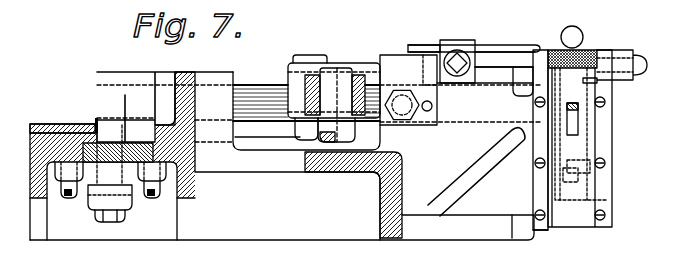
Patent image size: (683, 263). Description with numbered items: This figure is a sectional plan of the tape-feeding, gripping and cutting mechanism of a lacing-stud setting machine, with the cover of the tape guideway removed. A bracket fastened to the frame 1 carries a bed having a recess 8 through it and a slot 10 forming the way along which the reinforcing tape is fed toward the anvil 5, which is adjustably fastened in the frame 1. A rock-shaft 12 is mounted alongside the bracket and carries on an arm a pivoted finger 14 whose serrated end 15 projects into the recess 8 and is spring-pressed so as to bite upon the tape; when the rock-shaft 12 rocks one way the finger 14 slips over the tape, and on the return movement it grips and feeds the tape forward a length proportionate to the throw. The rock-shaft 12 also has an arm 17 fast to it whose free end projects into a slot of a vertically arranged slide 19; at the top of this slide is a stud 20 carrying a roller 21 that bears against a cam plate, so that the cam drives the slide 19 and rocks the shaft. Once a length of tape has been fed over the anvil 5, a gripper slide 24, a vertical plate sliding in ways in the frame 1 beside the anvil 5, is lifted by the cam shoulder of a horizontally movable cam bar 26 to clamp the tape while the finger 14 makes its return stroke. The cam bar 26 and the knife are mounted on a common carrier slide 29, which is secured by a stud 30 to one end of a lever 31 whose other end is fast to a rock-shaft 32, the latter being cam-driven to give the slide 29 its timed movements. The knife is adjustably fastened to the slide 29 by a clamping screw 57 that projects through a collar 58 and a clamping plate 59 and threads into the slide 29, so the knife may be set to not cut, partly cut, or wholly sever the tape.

The frame 1 is at (378, 205).
The anvil 5 is at (565, 29).
The recess 8 is at (588, 82).
The slot 10 is at (573, 220).
The rock-shaft 12 is at (262, 88).
The finger 14 is at (573, 125).
The serrated end 15 is at (578, 110).
The arm 17 is at (95, 124).
The slide 19 is at (92, 160).
The stud 20 is at (113, 173).
The roller 21 is at (133, 200).
The gripper slide 24 is at (590, 50).
The cam bar 26 is at (495, 47).
The slide 29 is at (288, 68).
The stud 30 is at (320, 60).
The lever 31 is at (360, 72).
The rock-shaft 32 is at (342, 132).
The clamping screw 57 is at (455, 45).
The collar 58 is at (463, 55).
The clamping plate 59 is at (436, 50).